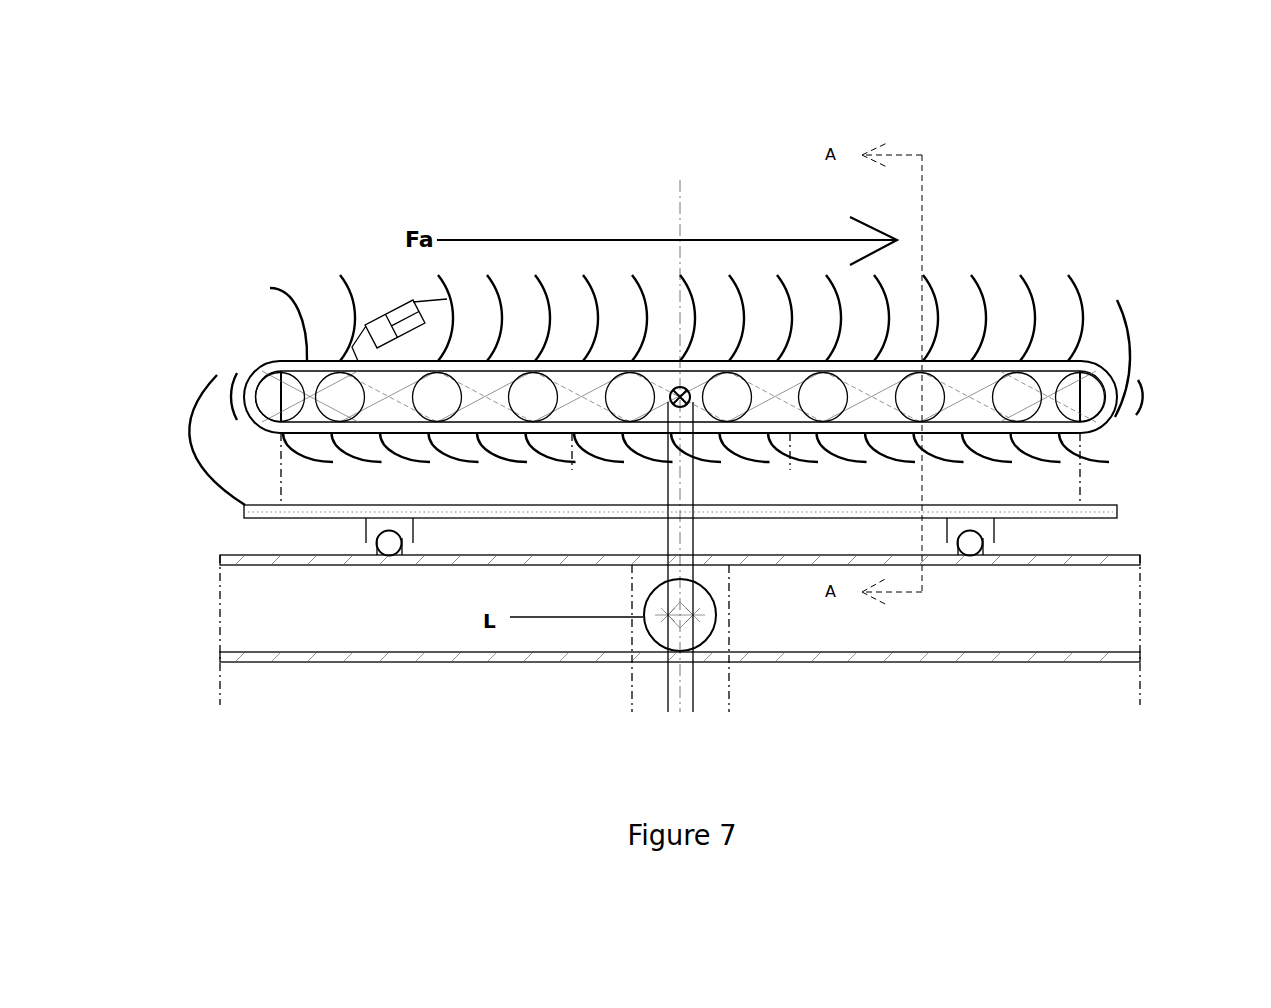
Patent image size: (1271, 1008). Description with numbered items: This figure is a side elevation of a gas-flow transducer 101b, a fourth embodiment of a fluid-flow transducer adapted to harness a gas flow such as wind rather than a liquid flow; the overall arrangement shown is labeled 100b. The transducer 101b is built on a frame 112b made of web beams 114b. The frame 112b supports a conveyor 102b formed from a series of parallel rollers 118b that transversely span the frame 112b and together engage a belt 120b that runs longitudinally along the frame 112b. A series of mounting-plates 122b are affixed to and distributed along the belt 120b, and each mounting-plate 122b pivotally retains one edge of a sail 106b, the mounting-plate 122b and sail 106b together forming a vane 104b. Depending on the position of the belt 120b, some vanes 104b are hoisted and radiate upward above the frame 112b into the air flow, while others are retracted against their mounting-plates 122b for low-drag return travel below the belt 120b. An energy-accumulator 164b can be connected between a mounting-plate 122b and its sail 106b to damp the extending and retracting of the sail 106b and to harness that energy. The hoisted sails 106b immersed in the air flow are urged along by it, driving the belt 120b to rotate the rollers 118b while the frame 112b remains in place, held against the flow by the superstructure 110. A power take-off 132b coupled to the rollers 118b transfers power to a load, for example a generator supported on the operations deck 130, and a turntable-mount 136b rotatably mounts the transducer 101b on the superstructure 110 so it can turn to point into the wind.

The conveying system 100b is at (1113, 160).
The gas-flow transducer 101b is at (214, 130).
The conveyor 102b is at (227, 318).
The vane 104b is at (1147, 339).
The sail 106b is at (338, 275).
The superstructure 110 is at (192, 556).
The frame 112b is at (1122, 492).
The web beams 114b is at (1148, 562).
The rollers 118b is at (268, 400).
The belt 120b is at (1117, 413).
The mounting-plate 122b is at (288, 350).
The operations deck 130 is at (930, 670).
The power take-off 132b is at (690, 387).
The turntable-mount 136b is at (1015, 541).
The energy-accumulator 164b is at (386, 292).